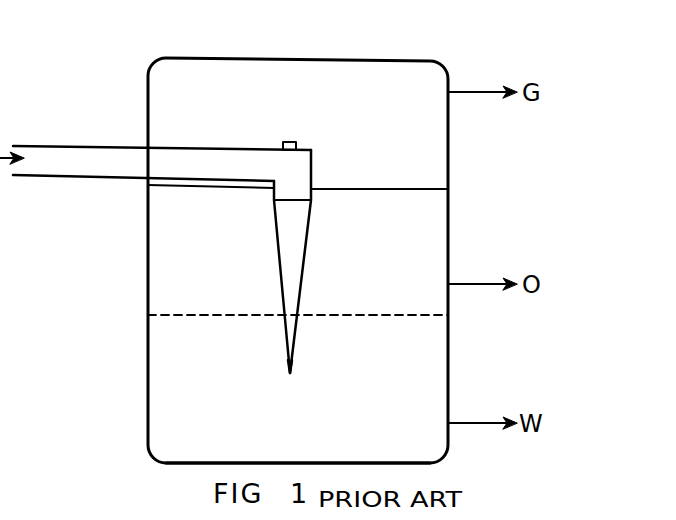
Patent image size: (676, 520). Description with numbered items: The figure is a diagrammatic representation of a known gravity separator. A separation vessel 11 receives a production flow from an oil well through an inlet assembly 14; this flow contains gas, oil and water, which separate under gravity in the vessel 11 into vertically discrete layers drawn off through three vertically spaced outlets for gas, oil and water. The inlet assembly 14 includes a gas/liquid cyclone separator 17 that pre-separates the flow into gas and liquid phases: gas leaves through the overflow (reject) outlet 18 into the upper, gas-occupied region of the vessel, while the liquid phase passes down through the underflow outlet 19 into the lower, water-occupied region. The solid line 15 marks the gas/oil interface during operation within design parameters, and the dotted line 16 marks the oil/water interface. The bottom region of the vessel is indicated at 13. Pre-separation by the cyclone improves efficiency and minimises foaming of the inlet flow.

The separation vessel 11 is at (148, 365).
The tank bottom 13 is at (216, 461).
The inlet assembly 14 is at (93, 146).
The solid line 15 is at (405, 190).
The dotted line 16 is at (207, 318).
The gas/liquid cyclone separator 17 is at (309, 234).
The overflow (reject) outlet 18 is at (291, 142).
The underflow outlet 19 is at (292, 372).